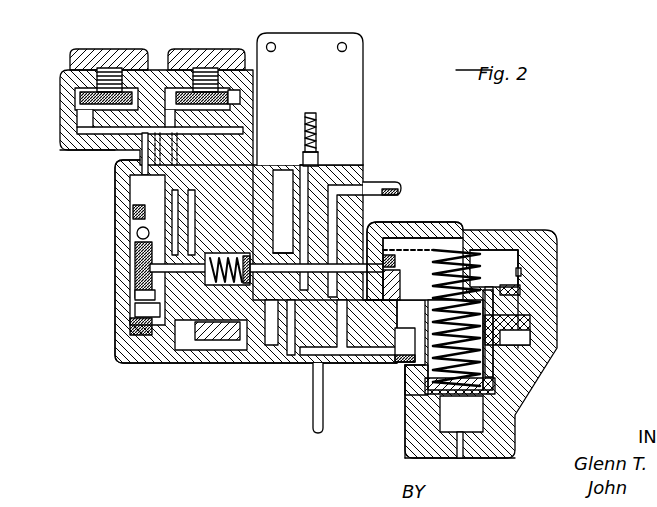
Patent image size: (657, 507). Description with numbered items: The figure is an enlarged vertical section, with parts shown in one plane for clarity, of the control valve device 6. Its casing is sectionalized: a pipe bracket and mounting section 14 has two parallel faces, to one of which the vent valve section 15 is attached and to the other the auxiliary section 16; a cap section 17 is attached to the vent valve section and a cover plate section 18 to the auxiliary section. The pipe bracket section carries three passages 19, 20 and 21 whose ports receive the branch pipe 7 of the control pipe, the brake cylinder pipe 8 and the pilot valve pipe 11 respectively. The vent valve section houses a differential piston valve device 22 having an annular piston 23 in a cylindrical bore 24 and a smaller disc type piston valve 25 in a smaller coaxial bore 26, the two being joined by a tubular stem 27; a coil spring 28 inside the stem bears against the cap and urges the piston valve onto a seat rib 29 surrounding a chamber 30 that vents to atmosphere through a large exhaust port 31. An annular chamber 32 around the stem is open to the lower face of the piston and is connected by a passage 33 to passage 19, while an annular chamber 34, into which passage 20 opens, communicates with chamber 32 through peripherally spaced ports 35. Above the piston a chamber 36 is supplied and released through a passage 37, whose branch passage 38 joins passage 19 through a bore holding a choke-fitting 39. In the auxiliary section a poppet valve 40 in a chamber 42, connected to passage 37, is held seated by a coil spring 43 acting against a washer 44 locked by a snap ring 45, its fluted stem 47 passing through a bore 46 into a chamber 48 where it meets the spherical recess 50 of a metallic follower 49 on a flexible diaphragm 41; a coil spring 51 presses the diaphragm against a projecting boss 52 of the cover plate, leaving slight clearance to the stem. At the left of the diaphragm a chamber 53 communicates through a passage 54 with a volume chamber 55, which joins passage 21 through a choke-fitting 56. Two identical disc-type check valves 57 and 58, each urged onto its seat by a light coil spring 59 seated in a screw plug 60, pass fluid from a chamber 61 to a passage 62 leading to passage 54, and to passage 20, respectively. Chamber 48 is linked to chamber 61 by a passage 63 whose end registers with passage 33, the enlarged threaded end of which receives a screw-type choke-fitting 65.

The control valve device 6 is at (100, 181).
The branch pipe 7 is at (402, 188).
The brake cylinder pipe 8 is at (313, 425).
The pilot valve pipe 11 is at (316, 118).
The pipe bracket and mounting section 14 is at (352, 172).
The vent valve section 15 is at (540, 310).
The auxiliary section 16 is at (168, 358).
The cap section 17 is at (530, 232).
The cover plate section 18 is at (125, 352).
The passage 19 is at (330, 213).
The passage 20 is at (207, 348).
The passage 21 is at (325, 166).
The differential piston valve device 22 is at (520, 340).
The annular piston 23 is at (522, 292).
The cylindrical bore 24 is at (521, 273).
The disc type piston valve 25 is at (422, 372).
The cylindrical bore 26 is at (500, 412).
The tubular stem 27 is at (515, 390).
The coil spring 28 is at (463, 245).
The lower housing 29 is at (520, 433).
The chamber 30 is at (440, 400).
The exhaust port 31 is at (460, 458).
The annular chamber 32 is at (530, 323).
The passage 33 is at (342, 330).
The annular chamber 34 is at (400, 362).
The ports 35 is at (515, 374).
The chamber 36 is at (505, 262).
The passage 37 is at (408, 230).
The branch passage 38 is at (395, 261).
The choke-fitting 39 is at (400, 282).
The poppet valve 40 is at (190, 262).
The flexible diaphragm 41 is at (137, 233).
The chamber 42 is at (284, 242).
The coil spring 43 is at (240, 256).
The washer 44 is at (217, 328).
The snap ring 45 is at (284, 211).
The bore 46 is at (200, 250).
The fluted stem 47 is at (211, 333).
The chamber 48 is at (133, 213).
The metallic follower 49 is at (150, 268).
The spherical recess 50 is at (135, 293).
The coil spring 51 is at (130, 326).
The projecting boss 52 is at (135, 250).
The chamber 53 is at (135, 310).
The passage 54 is at (130, 193).
The volume chamber 55 is at (298, 170).
The choke-fitting 56 is at (300, 168).
The check valve 57 is at (80, 99).
The check valve 58 is at (242, 94).
The coil spring 59 is at (103, 52).
The screw plug 60 is at (121, 55).
The chamber 61 is at (82, 133).
The passage 62 is at (140, 158).
The passage 63 is at (252, 352).
The choke-fitting 65 is at (291, 358).